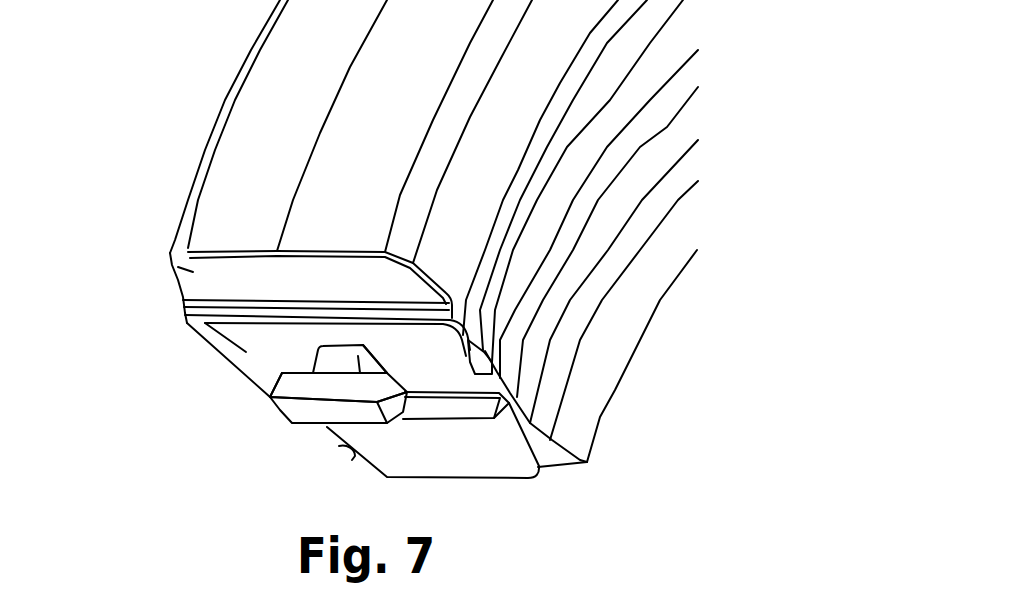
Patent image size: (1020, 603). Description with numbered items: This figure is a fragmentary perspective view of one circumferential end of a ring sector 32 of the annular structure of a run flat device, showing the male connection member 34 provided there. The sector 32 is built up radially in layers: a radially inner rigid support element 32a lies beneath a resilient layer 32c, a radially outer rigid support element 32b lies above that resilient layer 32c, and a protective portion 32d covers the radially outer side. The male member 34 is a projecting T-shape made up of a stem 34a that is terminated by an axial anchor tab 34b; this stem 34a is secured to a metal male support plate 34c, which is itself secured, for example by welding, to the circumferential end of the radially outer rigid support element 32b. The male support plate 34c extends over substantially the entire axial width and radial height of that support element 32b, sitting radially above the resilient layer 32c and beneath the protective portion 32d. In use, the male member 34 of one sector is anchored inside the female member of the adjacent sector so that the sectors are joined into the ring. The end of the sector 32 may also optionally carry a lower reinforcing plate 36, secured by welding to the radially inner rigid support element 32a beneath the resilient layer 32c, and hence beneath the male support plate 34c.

The ring sector 32 is at (104, 302).
The radially inner rigid support element 32a is at (322, 448).
The radially outer rigid support element 32b is at (186, 335).
The resilient layer 32c is at (537, 313).
The protective portion 32d is at (170, 266).
The male connection member 34 is at (245, 413).
The stem 34a is at (365, 351).
The axial anchor tab 34b is at (287, 377).
The male support plate 34c is at (262, 368).
The lower reinforcing plate 36 is at (497, 463).